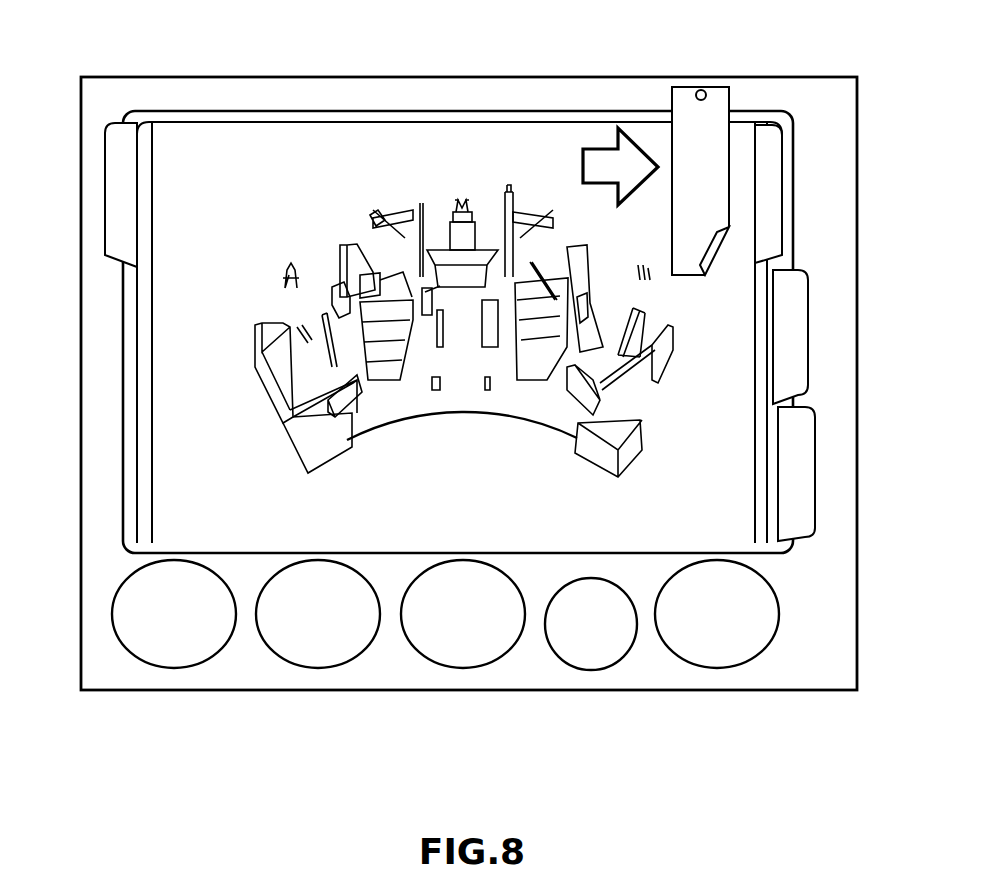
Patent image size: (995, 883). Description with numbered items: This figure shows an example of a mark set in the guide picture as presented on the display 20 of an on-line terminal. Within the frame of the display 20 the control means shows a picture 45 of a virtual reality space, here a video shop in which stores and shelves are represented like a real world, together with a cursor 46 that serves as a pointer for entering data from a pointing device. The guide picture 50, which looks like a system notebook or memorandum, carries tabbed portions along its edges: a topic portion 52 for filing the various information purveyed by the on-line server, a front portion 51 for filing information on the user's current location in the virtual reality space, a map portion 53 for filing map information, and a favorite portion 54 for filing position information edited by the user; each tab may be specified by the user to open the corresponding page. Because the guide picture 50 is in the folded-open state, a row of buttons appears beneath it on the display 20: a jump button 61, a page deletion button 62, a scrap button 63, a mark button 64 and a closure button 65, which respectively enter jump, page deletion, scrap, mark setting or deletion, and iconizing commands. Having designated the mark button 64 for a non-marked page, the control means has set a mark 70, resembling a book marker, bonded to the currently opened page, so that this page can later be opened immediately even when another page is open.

The display 20 is at (508, 77).
The picture of a virtual reality space 45 is at (153, 97).
The guide picture 50 is at (320, 150).
The cursor 46 is at (598, 165).
The mark 70 is at (690, 87).
The topic portion 52 is at (105, 210).
The front portion 51 is at (782, 188).
The map portion 53 is at (808, 330).
The favorite portion 54 is at (815, 453).
The jump button 61 is at (170, 660).
The page deletion button 62 is at (316, 660).
The scrap button 63 is at (463, 660).
The mark button 64 is at (591, 668).
The closure button 65 is at (718, 660).